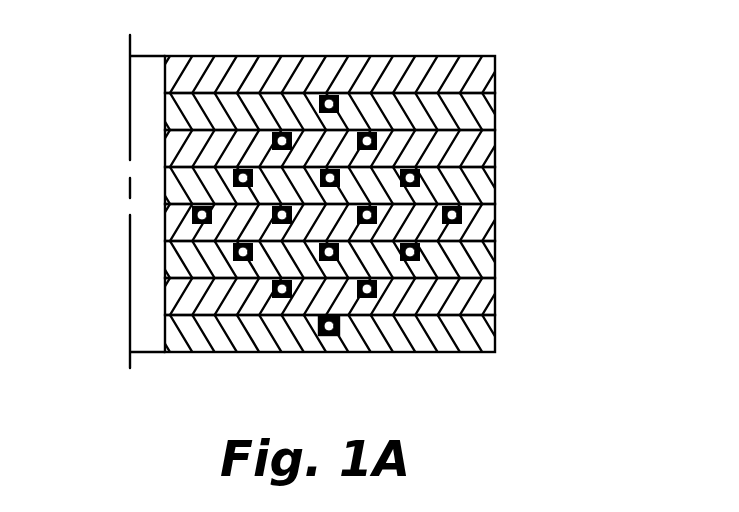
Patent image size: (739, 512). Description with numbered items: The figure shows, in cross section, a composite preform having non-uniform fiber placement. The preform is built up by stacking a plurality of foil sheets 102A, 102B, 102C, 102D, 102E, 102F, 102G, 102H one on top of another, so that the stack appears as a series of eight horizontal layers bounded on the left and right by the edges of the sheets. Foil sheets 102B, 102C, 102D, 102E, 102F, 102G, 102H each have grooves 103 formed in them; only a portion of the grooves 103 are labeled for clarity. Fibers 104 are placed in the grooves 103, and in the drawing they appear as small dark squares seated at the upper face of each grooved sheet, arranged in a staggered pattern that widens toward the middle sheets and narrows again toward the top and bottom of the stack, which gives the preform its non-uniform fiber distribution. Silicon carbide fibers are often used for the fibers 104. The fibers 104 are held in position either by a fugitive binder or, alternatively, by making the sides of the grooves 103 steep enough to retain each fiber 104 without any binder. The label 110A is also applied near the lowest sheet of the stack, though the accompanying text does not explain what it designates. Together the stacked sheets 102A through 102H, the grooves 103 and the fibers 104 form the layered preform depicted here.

The foil sheet 102A is at (495, 72).
The foil sheet 102B is at (495, 115).
The foil sheet 102C is at (495, 155).
The foil sheet 102D is at (495, 190).
The foil sheet 102E is at (495, 230).
The foil sheet 102F is at (495, 262).
The foil sheet 102G is at (495, 303).
The foil sheet 102H is at (495, 342).
The groove 103 is at (339, 106).
The fiber 104 is at (235, 183).
The laminated structure 110A is at (323, 334).